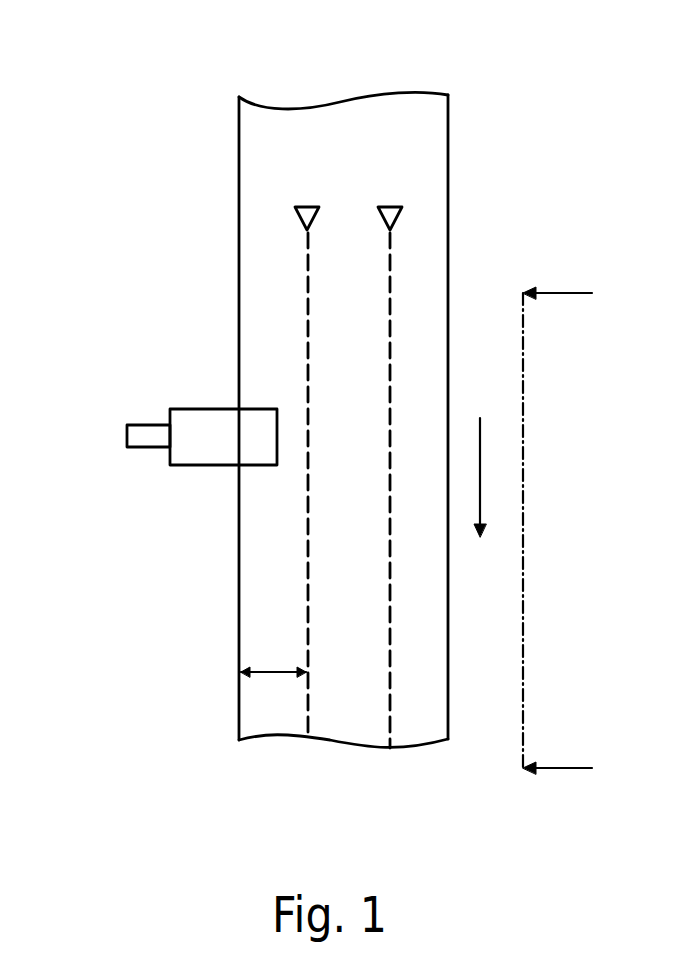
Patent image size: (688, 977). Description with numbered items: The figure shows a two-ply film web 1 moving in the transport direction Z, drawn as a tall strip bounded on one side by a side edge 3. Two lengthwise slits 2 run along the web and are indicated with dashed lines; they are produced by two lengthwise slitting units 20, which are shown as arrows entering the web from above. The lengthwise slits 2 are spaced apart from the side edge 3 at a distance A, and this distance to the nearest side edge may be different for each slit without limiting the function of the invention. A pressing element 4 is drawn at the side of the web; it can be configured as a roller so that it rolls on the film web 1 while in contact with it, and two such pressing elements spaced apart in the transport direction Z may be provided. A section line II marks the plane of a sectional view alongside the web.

The two-ply film web 1 is at (284, 322).
The lengthwise slit 2 is at (307, 609).
The side edge 3 is at (238, 549).
The pressing element 4 is at (192, 447).
The lengthwise slitting unit 20 is at (306, 207).
The distance A is at (274, 672).
The transport direction Z is at (492, 477).
The section line II- II is at (568, 531).